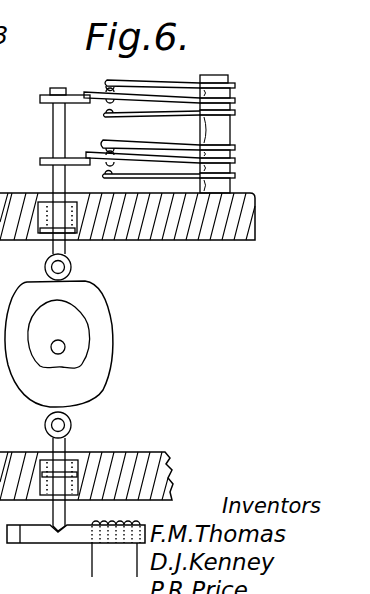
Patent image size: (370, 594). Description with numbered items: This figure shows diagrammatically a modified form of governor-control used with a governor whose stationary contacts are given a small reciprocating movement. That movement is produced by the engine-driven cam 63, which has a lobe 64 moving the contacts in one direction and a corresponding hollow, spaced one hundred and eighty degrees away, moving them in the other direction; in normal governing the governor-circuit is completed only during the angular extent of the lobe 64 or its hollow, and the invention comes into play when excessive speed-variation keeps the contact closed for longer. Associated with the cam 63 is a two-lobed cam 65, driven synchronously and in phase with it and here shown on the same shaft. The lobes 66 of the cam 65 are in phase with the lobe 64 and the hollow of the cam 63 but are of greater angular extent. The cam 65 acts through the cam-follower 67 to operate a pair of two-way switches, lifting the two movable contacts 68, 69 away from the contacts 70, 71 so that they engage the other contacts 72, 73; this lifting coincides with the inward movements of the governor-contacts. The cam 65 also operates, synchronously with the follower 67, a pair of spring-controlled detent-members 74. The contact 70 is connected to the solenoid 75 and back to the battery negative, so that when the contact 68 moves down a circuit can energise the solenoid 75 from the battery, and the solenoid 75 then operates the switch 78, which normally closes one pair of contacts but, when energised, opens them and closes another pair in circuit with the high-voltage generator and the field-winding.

The cam 63 is at (73, 337).
The lobe 64 is at (60, 310).
The two-lobed cam 65 is at (53, 384).
The lobes 66 is at (72, 290).
The cam-follower 67 is at (55, 142).
The movable contact 68 is at (157, 98).
The movable contact 69 is at (157, 161).
The contact 70 is at (104, 115).
The contact 71 is at (109, 179).
The contact 72 is at (108, 80).
The contact 73 is at (103, 142).
The spring-controlled detent-members 74 is at (50, 445).
The solenoid 75 is at (115, 543).
The switch 78 is at (73, 535).